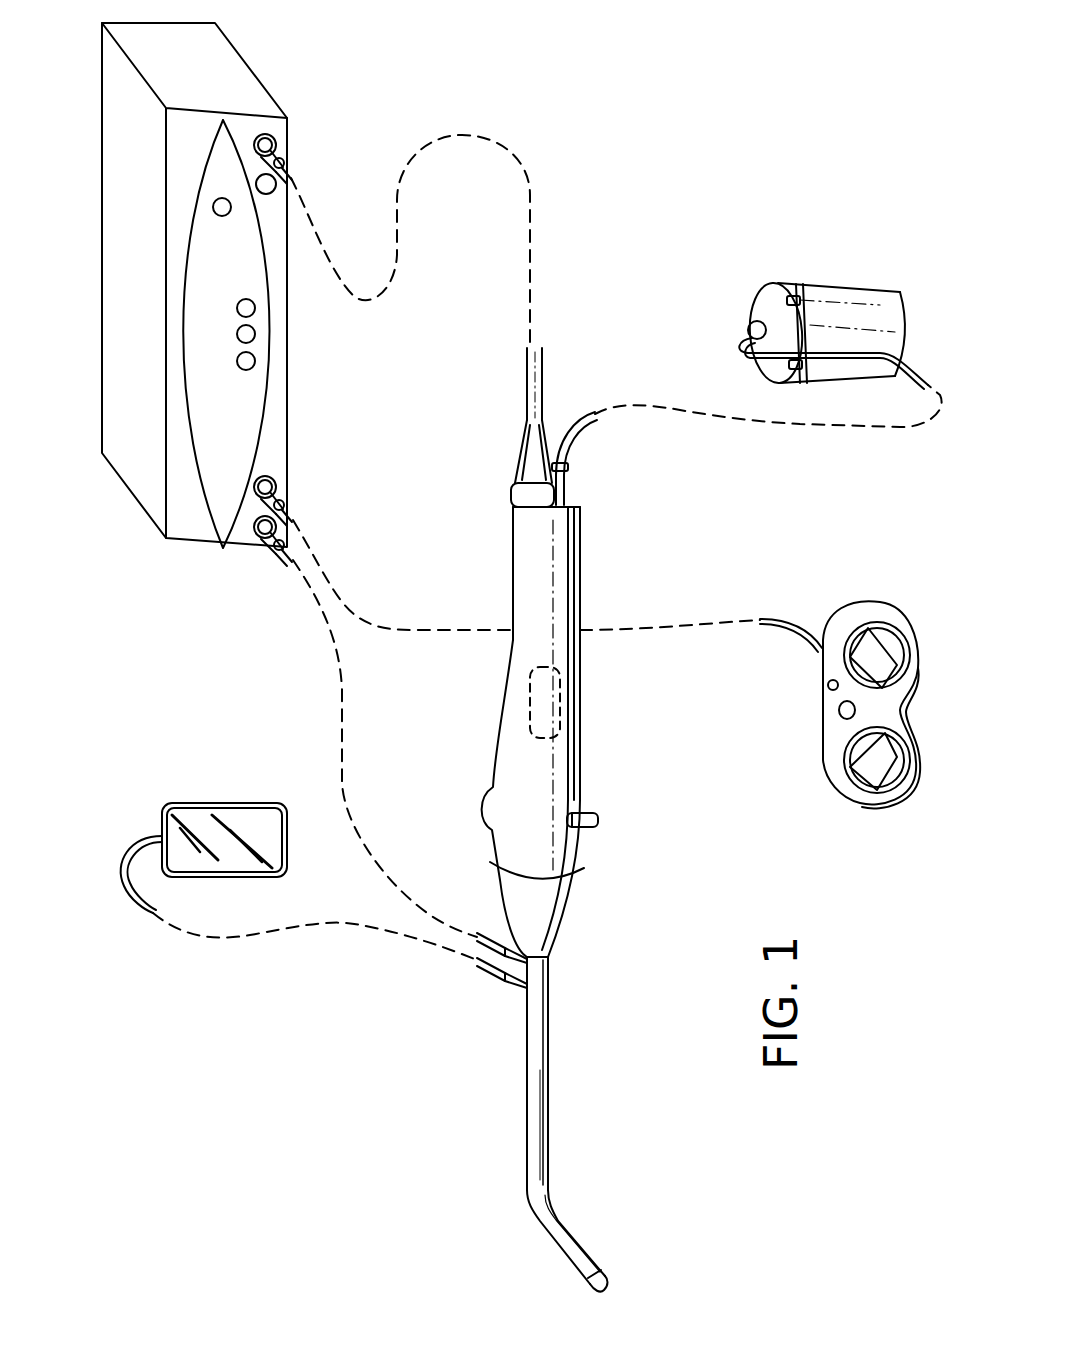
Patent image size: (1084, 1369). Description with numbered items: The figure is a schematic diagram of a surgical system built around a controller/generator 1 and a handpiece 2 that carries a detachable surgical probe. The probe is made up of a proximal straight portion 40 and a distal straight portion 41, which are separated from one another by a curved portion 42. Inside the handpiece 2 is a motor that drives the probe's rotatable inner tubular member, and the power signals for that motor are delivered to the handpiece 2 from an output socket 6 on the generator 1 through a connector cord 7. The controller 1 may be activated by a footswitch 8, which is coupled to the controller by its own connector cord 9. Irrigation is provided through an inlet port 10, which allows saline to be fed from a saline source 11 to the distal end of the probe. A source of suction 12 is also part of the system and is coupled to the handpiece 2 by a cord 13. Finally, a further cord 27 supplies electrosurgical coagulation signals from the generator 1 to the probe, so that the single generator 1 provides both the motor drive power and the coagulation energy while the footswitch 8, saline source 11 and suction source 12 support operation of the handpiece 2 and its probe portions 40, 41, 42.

The controller/generator 1 is at (112, 283).
The handpiece 2 is at (495, 742).
The output socket 6 is at (280, 150).
The connector cord 7 is at (545, 362).
The footswitch 8 is at (820, 708).
The connector cord 9 is at (280, 492).
The inlet port 10 is at (517, 987).
The saline source 11 is at (175, 803).
The source of suction 12 is at (810, 290).
The cord 13 is at (577, 443).
The cord 27 is at (277, 540).
The proximal straight portion 40 is at (527, 1090).
The distal straight portion 41 is at (563, 1267).
The curved portion 42 is at (527, 1200).